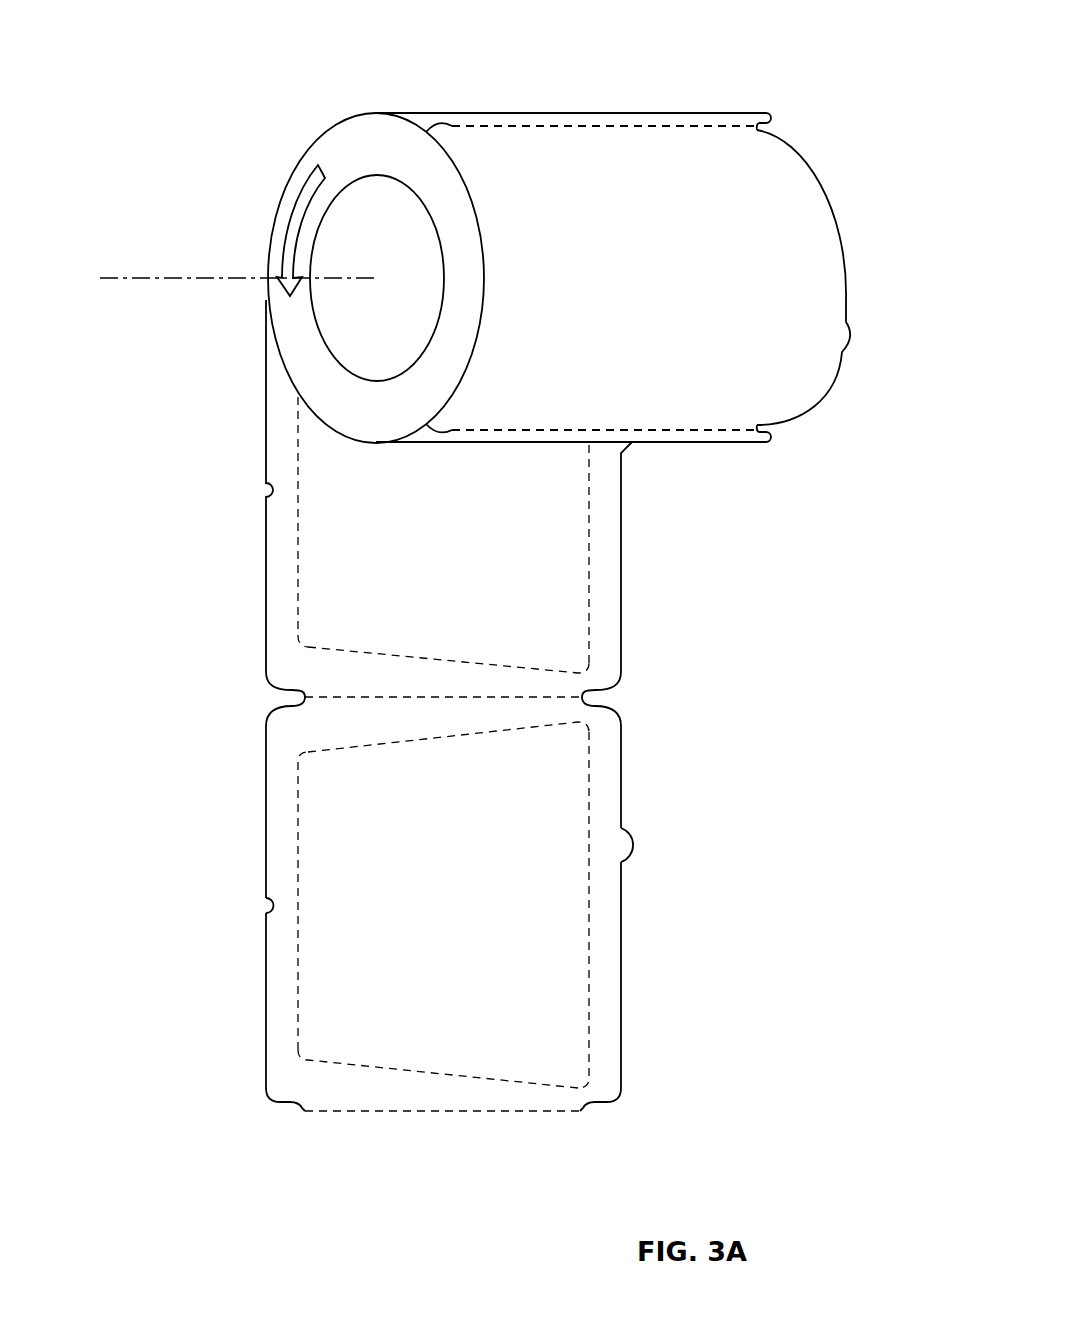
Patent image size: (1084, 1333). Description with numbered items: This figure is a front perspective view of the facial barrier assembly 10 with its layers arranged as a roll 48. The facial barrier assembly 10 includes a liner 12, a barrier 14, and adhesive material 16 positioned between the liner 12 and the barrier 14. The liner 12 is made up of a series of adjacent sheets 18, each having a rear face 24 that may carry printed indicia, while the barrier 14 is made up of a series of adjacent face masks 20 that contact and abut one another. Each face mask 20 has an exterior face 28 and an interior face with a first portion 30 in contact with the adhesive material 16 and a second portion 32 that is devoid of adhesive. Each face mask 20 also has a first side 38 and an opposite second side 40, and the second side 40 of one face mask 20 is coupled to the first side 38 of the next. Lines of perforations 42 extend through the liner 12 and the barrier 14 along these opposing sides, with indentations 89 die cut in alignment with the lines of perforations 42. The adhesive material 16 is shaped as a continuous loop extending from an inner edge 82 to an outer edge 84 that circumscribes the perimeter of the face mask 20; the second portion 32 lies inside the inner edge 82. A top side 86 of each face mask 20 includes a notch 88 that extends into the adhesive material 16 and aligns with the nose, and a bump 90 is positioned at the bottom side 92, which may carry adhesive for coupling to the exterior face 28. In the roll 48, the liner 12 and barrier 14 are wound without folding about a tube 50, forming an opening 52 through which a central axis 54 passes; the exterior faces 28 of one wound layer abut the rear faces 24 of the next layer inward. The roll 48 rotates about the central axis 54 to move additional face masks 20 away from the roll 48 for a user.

The facial barrier assembly 10 is at (847, 33).
The liner 12 is at (549, 283).
The barrier 14 is at (265, 1032).
The adhesive material 16 is at (609, 798).
The sheet 18 is at (740, 358).
The face mask 20 is at (327, 517).
The rear face 24 is at (796, 198).
The exterior face 28 is at (560, 972).
The first portion 30 is at (604, 540).
The second portion 32 is at (560, 480).
The first side 38 is at (508, 717).
The second side 40 is at (488, 665).
The line of perforations 42 is at (387, 698).
The roll 48 is at (235, 207).
The tube 50 is at (358, 285).
The opening 52 is at (359, 218).
The central axis 54 is at (112, 281).
The inner edge 82 is at (300, 947).
The outer edge 84 is at (266, 968).
The top side 86 is at (266, 605).
The notch 88 is at (249, 913).
The indentation 89 is at (636, 699).
The bump 90 is at (623, 844).
The bottom side 92 is at (623, 614).